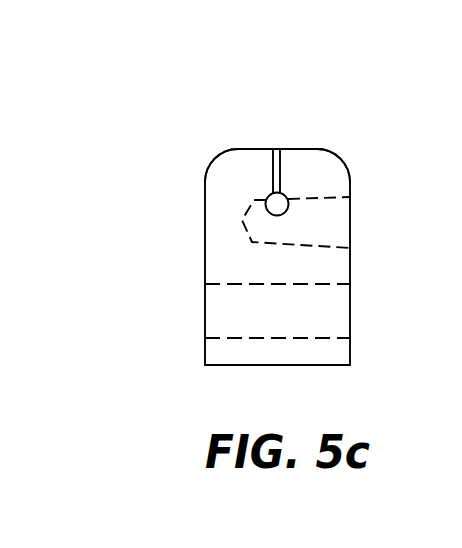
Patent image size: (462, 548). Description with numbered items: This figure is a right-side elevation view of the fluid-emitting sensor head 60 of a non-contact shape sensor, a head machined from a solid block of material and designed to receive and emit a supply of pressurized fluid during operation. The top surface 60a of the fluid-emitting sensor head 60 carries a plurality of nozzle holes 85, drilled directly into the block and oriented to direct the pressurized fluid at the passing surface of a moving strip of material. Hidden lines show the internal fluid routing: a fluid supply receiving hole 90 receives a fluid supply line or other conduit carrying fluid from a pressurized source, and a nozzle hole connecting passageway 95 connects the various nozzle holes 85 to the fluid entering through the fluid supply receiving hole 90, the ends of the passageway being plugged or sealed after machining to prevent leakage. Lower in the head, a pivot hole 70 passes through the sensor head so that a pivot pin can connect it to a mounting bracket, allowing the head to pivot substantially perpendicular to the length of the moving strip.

The fluid-emitting sensor head 60 is at (165, 128).
The top surface 60a is at (238, 150).
The nozzle holes 85 is at (279, 150).
The nozzle hole connecting passageway 95 is at (279, 202).
The fluid supply receiving hole 90 is at (323, 195).
The pivot hole 70 is at (232, 284).